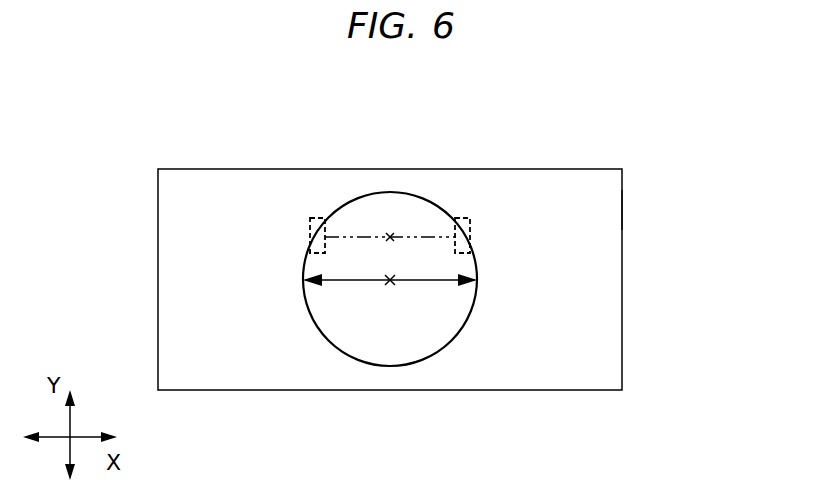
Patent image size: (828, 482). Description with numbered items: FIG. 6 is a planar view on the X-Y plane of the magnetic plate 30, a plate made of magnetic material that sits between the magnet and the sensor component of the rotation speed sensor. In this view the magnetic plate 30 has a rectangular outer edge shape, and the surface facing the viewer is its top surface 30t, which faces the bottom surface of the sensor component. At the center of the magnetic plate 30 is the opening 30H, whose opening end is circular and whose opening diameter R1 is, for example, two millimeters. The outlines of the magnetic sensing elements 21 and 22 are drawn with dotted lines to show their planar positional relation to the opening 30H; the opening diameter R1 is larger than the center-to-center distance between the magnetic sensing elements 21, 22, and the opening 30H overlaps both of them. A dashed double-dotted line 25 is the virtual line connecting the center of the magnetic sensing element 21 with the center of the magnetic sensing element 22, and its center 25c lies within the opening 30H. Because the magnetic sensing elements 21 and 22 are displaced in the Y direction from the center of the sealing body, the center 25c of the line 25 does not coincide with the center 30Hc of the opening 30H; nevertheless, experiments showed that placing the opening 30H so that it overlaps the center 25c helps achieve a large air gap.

The magnetic plate 30 is at (655, 153).
The top surface 30t is at (603, 208).
The opening 30H is at (402, 353).
The center of the opening 30Hc is at (389, 284).
The opening diameter R1 is at (425, 283).
The line 25 is at (418, 236).
The center of the line 25c is at (386, 236).
The magnetic sensing element 21 is at (312, 238).
The magnetic sensing element 22 is at (470, 232).